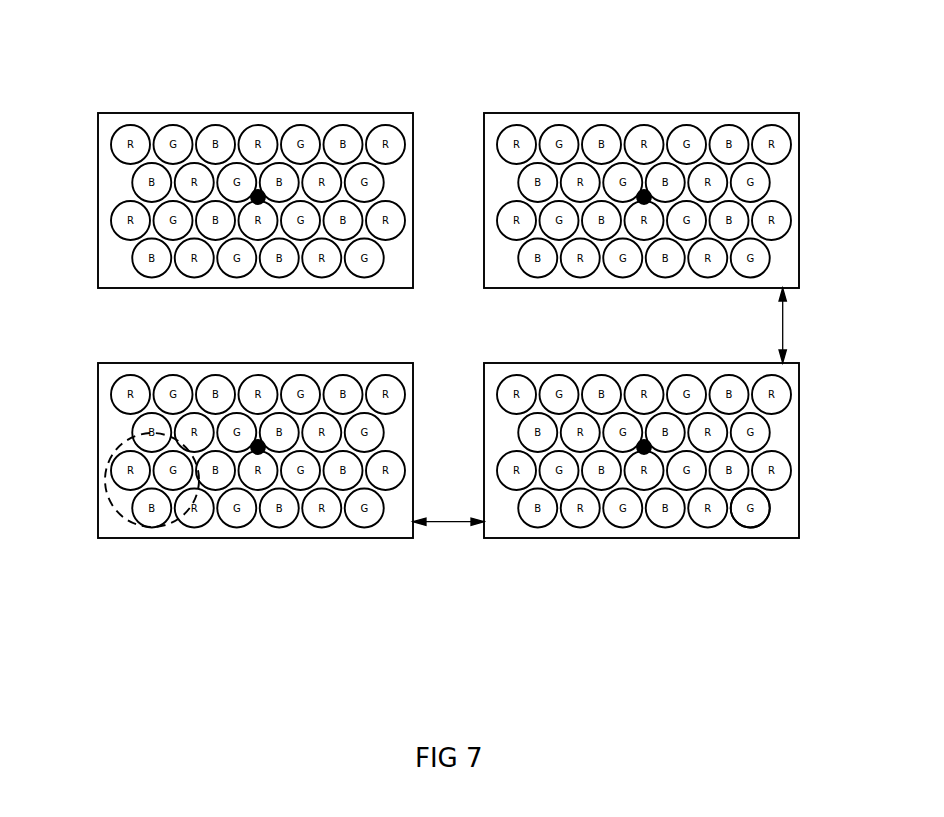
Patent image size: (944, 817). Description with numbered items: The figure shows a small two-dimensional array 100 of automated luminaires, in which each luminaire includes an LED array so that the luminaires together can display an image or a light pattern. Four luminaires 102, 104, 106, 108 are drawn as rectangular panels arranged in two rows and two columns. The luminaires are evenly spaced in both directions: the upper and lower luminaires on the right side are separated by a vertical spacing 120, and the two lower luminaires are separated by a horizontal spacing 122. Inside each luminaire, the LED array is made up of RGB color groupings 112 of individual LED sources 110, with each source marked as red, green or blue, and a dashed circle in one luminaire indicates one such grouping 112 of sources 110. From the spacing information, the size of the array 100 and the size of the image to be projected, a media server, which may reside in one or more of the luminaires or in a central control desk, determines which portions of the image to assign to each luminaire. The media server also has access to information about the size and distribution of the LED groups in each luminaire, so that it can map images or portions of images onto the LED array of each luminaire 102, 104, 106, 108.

The array 100 is at (447, 95).
The luminaire 102 is at (117, 182).
The luminaire 104 is at (218, 450).
The luminaire 106 is at (783, 188).
The luminaire 108 is at (677, 450).
The individual LED source 110 is at (761, 517).
The RGB color grouping 112 is at (110, 497).
The vertical spacing 120 is at (798, 325).
The horizontal spacing 122 is at (448, 535).